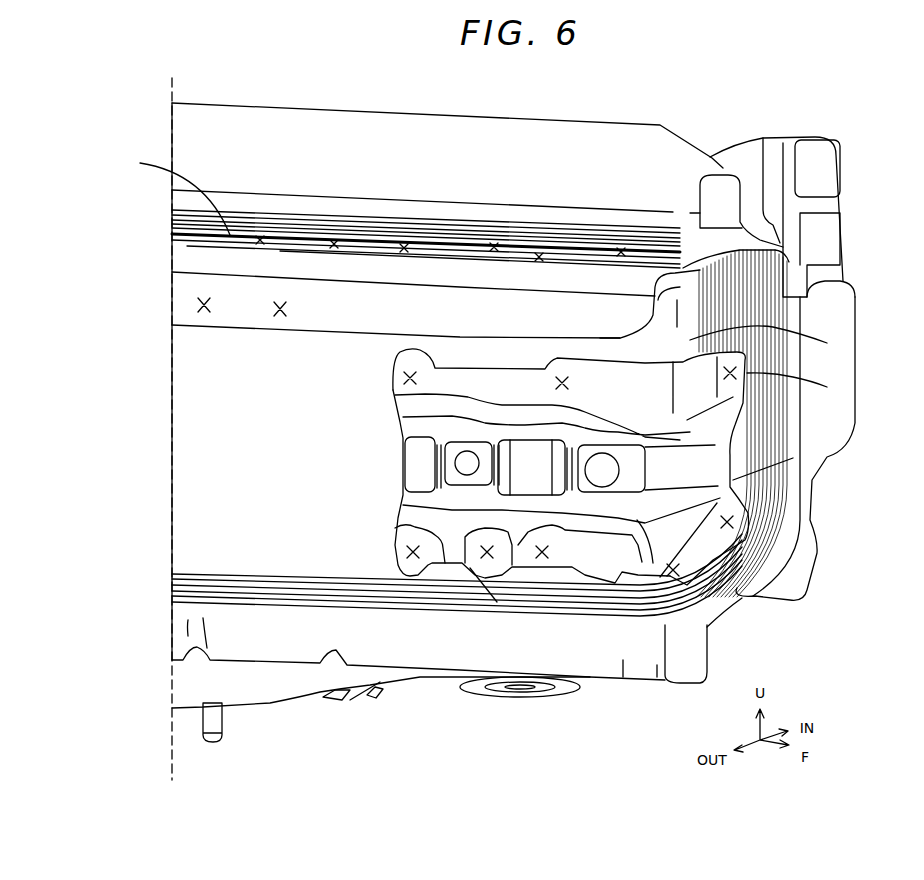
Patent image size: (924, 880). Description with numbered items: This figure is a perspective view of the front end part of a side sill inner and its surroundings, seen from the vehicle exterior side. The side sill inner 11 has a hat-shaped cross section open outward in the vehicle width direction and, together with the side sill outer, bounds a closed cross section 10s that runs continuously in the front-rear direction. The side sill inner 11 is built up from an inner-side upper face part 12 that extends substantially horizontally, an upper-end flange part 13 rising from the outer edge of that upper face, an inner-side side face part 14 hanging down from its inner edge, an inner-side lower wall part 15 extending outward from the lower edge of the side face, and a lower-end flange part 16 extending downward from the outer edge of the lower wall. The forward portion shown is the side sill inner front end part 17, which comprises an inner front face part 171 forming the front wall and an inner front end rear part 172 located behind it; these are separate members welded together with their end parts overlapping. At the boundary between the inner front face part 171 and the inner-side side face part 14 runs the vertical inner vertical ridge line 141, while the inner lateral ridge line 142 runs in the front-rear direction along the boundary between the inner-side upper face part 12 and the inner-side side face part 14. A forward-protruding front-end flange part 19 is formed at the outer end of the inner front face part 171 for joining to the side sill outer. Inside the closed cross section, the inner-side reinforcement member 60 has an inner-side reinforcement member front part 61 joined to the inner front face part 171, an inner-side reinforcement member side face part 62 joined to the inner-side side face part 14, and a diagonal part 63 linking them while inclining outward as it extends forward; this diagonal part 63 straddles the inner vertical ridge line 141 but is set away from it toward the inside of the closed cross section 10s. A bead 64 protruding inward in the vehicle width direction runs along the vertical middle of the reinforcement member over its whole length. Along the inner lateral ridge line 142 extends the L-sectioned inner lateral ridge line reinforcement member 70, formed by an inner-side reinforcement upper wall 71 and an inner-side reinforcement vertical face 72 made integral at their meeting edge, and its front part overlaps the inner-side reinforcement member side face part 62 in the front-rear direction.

The closed cross section 10s is at (280, 470).
The side sill inner 11 is at (545, 90).
The inner-side upper face part 12 is at (172, 222).
The upper-end flange part 13 is at (312, 125).
The inner-side side face part 14 is at (200, 419).
The inner-side lower wall part 15 is at (187, 575).
The lower-end flange part 16 is at (175, 618).
The side sill inner front end part 17 is at (482, 104).
The front-end flange part 19 is at (840, 303).
The inner-side reinforcement member 60 is at (533, 475).
The inner-side reinforcement member front part 61 is at (845, 383).
The inner-side reinforcement member side face part 62 is at (393, 387).
The diagonal part 63 is at (667, 330).
The bead 64 is at (405, 455).
The inner lateral ridge line reinforcement member 70 is at (211, 341).
The inner-side reinforcement upper wall 71 is at (170, 194).
The inner-side reinforcement vertical face 72 is at (182, 303).
The inner vertical ridge line 141 is at (840, 338).
The inner lateral ridge line 142 is at (685, 250).
The inner front face part 171 is at (846, 262).
The inner front end rear part 172 is at (192, 470).